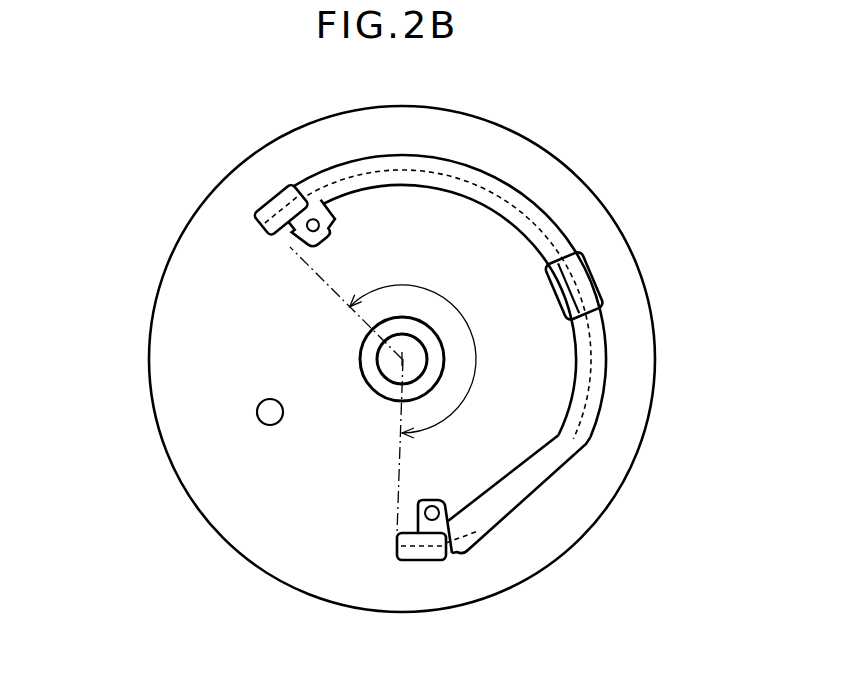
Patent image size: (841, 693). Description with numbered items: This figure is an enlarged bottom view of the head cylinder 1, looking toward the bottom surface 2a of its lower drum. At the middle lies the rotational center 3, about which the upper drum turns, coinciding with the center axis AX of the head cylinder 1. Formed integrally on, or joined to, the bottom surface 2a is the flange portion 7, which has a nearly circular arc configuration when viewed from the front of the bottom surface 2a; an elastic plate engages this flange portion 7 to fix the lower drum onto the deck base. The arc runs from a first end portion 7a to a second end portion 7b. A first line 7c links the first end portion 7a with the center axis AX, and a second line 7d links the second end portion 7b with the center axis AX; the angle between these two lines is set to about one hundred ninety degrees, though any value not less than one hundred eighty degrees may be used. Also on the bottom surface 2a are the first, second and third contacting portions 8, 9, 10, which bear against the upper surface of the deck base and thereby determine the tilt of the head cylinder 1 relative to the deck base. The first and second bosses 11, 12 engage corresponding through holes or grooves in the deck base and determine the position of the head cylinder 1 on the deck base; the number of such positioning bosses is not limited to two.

The head cylinder 1 is at (366, 359).
The bottom surface 2a is at (157, 383).
The rotational center 3 is at (361, 365).
The center axis AX is at (400, 361).
The flange portion 7 is at (555, 218).
The first end portion 7a is at (398, 550).
The second end portion 7b is at (262, 226).
The first line 7c is at (397, 477).
The second line 7d is at (334, 303).
The first contacting portion 8 is at (423, 557).
The second contacting portion 9 is at (270, 208).
The third contacting portion 10 is at (583, 292).
The first boss 11 is at (440, 497).
The second boss 12 is at (314, 219).